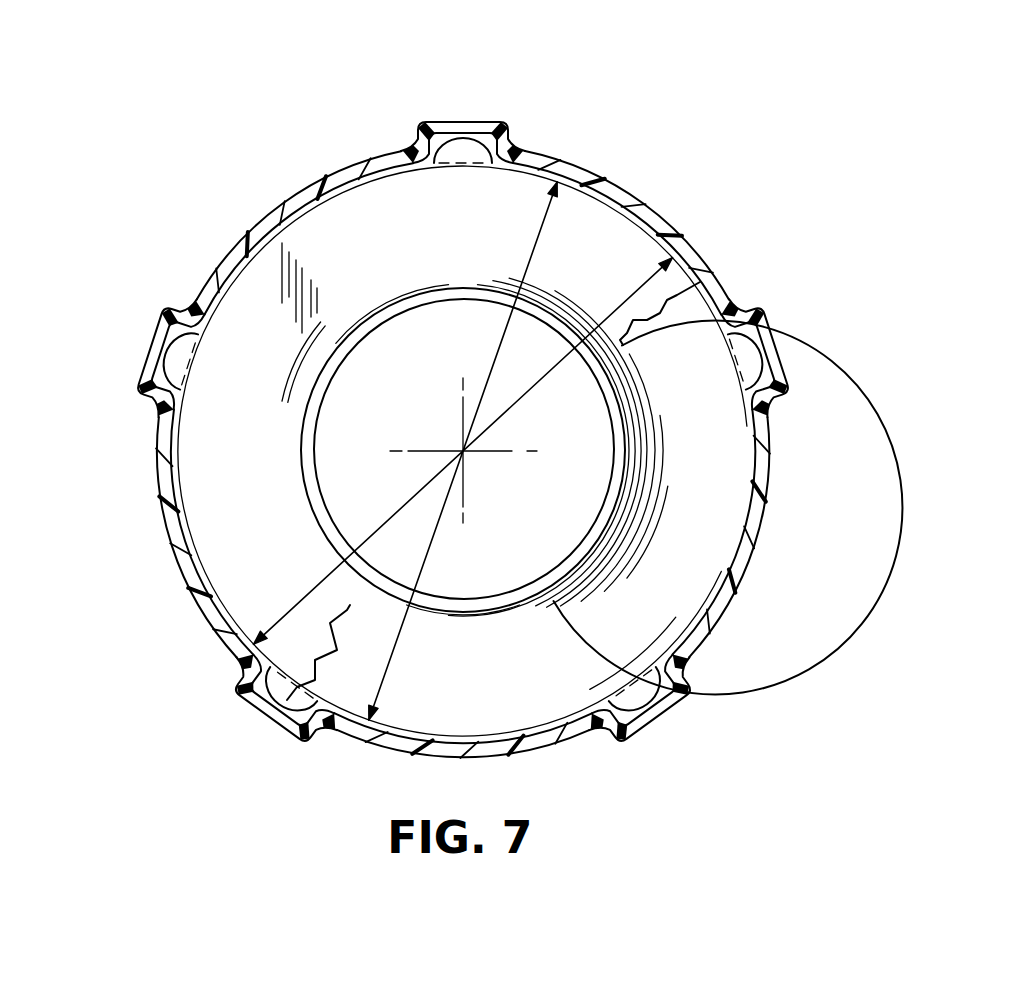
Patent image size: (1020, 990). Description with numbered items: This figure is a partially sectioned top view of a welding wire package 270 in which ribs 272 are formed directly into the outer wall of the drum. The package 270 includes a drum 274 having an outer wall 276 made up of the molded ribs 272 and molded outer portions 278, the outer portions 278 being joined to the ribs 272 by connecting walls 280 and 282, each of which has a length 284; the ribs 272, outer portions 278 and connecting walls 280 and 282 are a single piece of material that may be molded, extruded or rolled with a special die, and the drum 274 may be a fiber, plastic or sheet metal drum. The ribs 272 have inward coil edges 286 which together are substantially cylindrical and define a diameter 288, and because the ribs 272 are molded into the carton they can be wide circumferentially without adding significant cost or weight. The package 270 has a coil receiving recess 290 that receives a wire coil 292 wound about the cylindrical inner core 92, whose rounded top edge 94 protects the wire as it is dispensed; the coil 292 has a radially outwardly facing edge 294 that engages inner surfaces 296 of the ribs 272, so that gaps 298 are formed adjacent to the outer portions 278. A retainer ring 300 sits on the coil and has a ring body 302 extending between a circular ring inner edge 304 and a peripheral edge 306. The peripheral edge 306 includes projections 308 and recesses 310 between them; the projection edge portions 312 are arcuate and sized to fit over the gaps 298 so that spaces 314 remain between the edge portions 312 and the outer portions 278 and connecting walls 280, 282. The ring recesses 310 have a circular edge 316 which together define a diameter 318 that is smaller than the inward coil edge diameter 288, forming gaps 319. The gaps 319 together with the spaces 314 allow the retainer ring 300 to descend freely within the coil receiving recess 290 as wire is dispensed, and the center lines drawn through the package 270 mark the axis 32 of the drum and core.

The central axis 32 is at (463, 451).
The inner core 92 is at (403, 297).
The top edge 94 is at (348, 342).
The wire package 270 is at (668, 165).
The ribs 272 is at (258, 233).
The drum 274 is at (578, 167).
The outer wall 276 is at (698, 268).
The outer portions 278 is at (435, 125).
The connecting wall 280 is at (157, 333).
The connecting wall 282 is at (165, 390).
The length 284 is at (698, 315).
The inward coil edges 286 is at (290, 223).
The diameter 288 is at (397, 652).
The coil receiving recess 290 is at (425, 135).
The wire coil 292 is at (700, 562).
The radially outwardly facing edge 294 is at (245, 247).
The inner surfaces 296 is at (653, 232).
The gaps 298 is at (152, 368).
The retainer ring 300 is at (203, 437).
The ring body 302 is at (245, 424).
The circular ring inner edge 304 is at (280, 505).
The peripheral edge 306 is at (190, 473).
The projections 308 is at (462, 150).
The recesses 310 is at (343, 197).
The projection edge portions 312 is at (460, 138).
The spaces 314 is at (180, 333).
The circular edge 316 is at (590, 200).
The diameter 318 is at (382, 522).
The gaps 319 is at (312, 210).